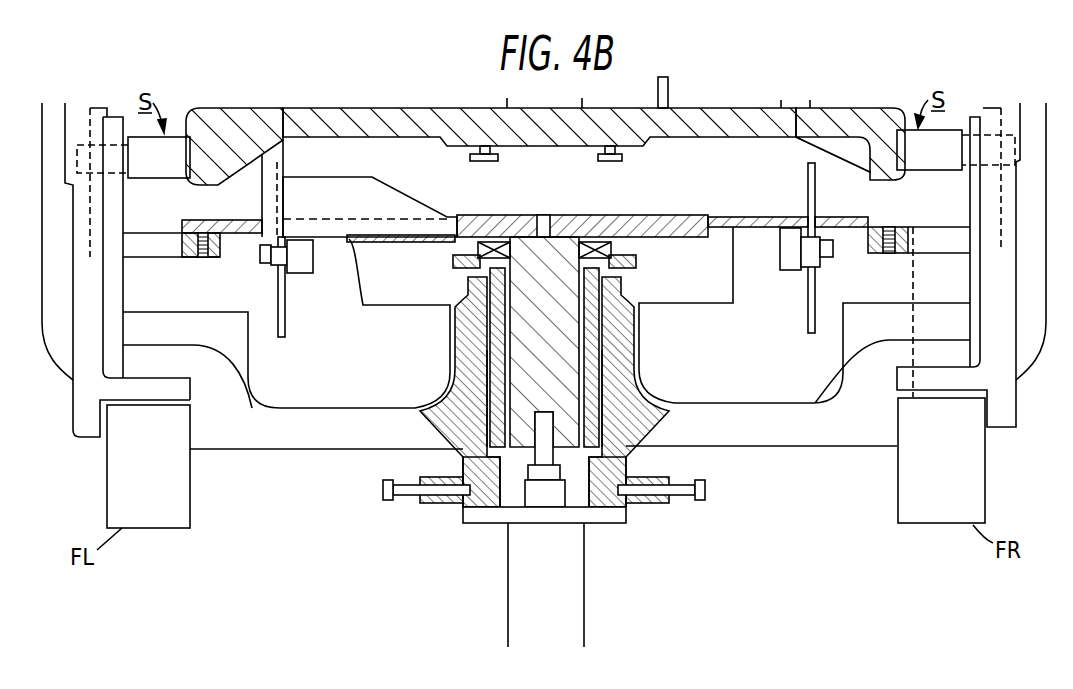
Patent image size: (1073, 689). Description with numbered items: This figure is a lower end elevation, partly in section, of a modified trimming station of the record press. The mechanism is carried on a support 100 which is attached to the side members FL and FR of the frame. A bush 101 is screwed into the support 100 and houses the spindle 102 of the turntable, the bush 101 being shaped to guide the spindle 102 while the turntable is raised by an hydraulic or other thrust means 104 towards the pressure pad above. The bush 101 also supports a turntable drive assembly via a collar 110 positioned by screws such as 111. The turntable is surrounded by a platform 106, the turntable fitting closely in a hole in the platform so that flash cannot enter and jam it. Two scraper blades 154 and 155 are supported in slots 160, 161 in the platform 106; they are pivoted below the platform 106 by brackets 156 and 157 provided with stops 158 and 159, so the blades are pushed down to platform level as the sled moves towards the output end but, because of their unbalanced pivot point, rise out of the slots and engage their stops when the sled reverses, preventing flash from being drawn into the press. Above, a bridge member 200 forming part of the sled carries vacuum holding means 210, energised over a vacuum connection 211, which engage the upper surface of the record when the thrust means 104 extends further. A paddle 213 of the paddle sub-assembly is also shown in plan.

The support 100 is at (283, 453).
The bush 101 is at (463, 468).
The spindle 102 is at (513, 414).
The thrust means 104 is at (586, 563).
The platform 106 is at (247, 218).
The collar 110 is at (443, 507).
The screws 111 is at (405, 502).
The scraper blade 154 is at (287, 323).
The scraper blade 155 is at (806, 178).
The bracket 156 is at (313, 260).
The bracket 157 is at (793, 272).
The stop 158 is at (273, 267).
The stop 159 is at (820, 264).
The slot 160 is at (290, 231).
The slot 161 is at (820, 217).
The bridge member 200 is at (383, 108).
The vacuum holding means 210 is at (597, 160).
The vacuum connection 211 is at (669, 94).
The paddle 213 is at (397, 189).